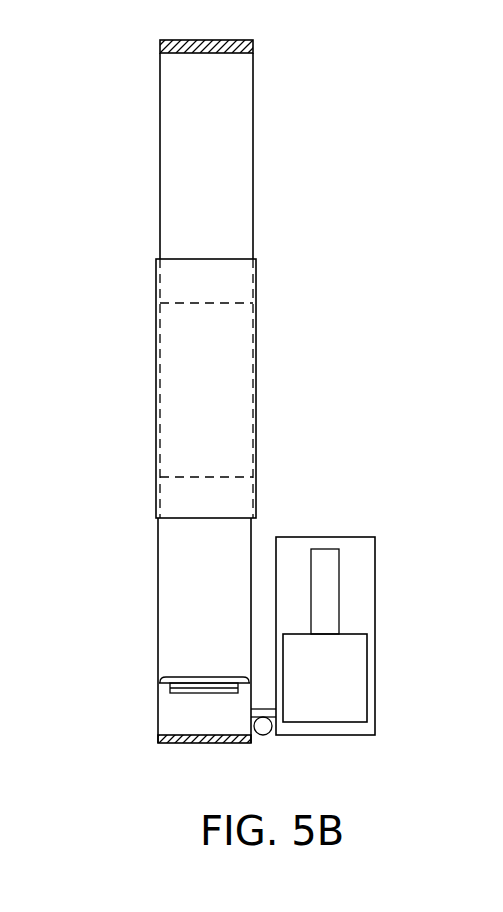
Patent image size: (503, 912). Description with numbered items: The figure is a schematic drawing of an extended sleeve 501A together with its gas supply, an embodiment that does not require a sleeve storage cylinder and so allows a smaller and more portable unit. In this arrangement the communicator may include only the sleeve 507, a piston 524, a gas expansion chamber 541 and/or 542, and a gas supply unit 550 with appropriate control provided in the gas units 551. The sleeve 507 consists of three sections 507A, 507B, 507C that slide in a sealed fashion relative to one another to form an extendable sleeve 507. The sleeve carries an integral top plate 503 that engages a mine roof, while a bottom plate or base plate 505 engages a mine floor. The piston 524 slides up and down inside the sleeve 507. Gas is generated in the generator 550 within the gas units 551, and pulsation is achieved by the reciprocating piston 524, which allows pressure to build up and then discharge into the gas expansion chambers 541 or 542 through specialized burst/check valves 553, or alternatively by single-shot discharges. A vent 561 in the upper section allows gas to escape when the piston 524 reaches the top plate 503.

The extended sleeve 501A is at (321, 391).
The top plate 503 is at (207, 44).
The bottom end cap 505 is at (168, 745).
The sleeve 507 is at (257, 335).
The first sleeve section 507A is at (158, 113).
The second sleeve section 507B is at (156, 388).
The third sleeve section 507C is at (158, 576).
The piston 524 is at (196, 676).
The gas expansion chamber 541 is at (163, 712).
The gas expansion chamber 542 is at (361, 676).
The gas supply unit 550 is at (376, 575).
The gas units 551 is at (325, 549).
The burst/check valves 553 is at (264, 736).
The vent 561 is at (247, 115).